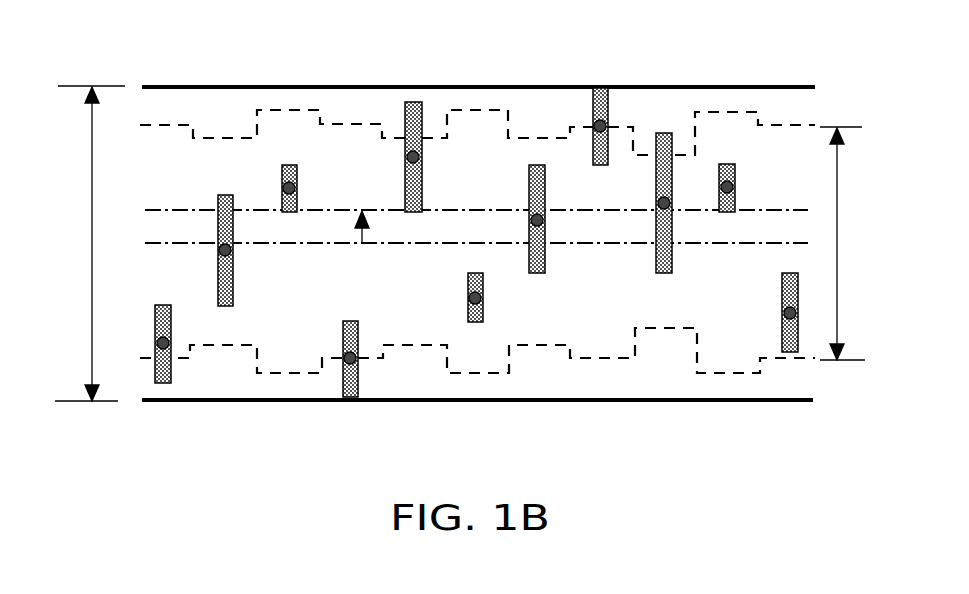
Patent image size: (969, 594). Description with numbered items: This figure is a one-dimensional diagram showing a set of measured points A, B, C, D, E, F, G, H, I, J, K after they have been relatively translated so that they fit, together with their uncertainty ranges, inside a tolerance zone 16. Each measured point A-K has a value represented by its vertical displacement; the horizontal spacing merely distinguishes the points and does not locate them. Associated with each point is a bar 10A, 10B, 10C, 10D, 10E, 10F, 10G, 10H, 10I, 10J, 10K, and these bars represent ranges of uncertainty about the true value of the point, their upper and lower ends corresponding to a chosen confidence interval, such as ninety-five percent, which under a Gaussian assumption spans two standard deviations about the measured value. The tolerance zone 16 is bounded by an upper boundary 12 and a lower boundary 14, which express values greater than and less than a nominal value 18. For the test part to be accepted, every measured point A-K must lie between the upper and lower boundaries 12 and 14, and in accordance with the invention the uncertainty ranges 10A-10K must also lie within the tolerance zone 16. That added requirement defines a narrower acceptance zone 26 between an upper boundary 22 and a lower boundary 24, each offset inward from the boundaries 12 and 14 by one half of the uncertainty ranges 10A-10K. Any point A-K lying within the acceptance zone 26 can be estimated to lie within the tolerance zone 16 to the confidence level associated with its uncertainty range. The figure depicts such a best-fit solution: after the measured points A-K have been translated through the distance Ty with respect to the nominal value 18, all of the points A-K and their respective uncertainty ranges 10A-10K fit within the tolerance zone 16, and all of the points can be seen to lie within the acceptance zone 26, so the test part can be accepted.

The upper boundary of tolerance zone 12 is at (697, 85).
The lower boundary of tolerance zone 14 is at (278, 402).
The tolerance zone 16 is at (90, 246).
The nominal value 18 is at (634, 248).
The upper boundary of acceptance zone 22 is at (222, 138).
The lower boundary of acceptance zone 24 is at (604, 360).
The acceptance zone 26 is at (846, 300).
The uncertainty range bar 10A is at (153, 326).
The uncertainty range bar 10B is at (216, 277).
The uncertainty range bar 10C is at (280, 172).
The uncertainty range bar 10D is at (342, 336).
The uncertainty range bar 10E is at (404, 185).
The uncertainty range bar 10F is at (466, 288).
The uncertainty range bar 10G is at (530, 280).
The uncertainty range bar 10H is at (592, 98).
The uncertainty range bar 10I is at (654, 186).
The uncertainty range bar 10J is at (738, 170).
The uncertainty range bar 10K is at (780, 292).
The measured point A is at (173, 343).
The measured point B is at (234, 252).
The measured point C is at (298, 188).
The measured point D is at (359, 360).
The measured point E is at (422, 158).
The measured point F is at (484, 300).
The measured point G is at (546, 221).
The measured point H is at (608, 124).
The measured point I is at (673, 201).
The measured point J is at (736, 189).
The measured point K is at (780, 315).
The translation distance Ty is at (370, 232).